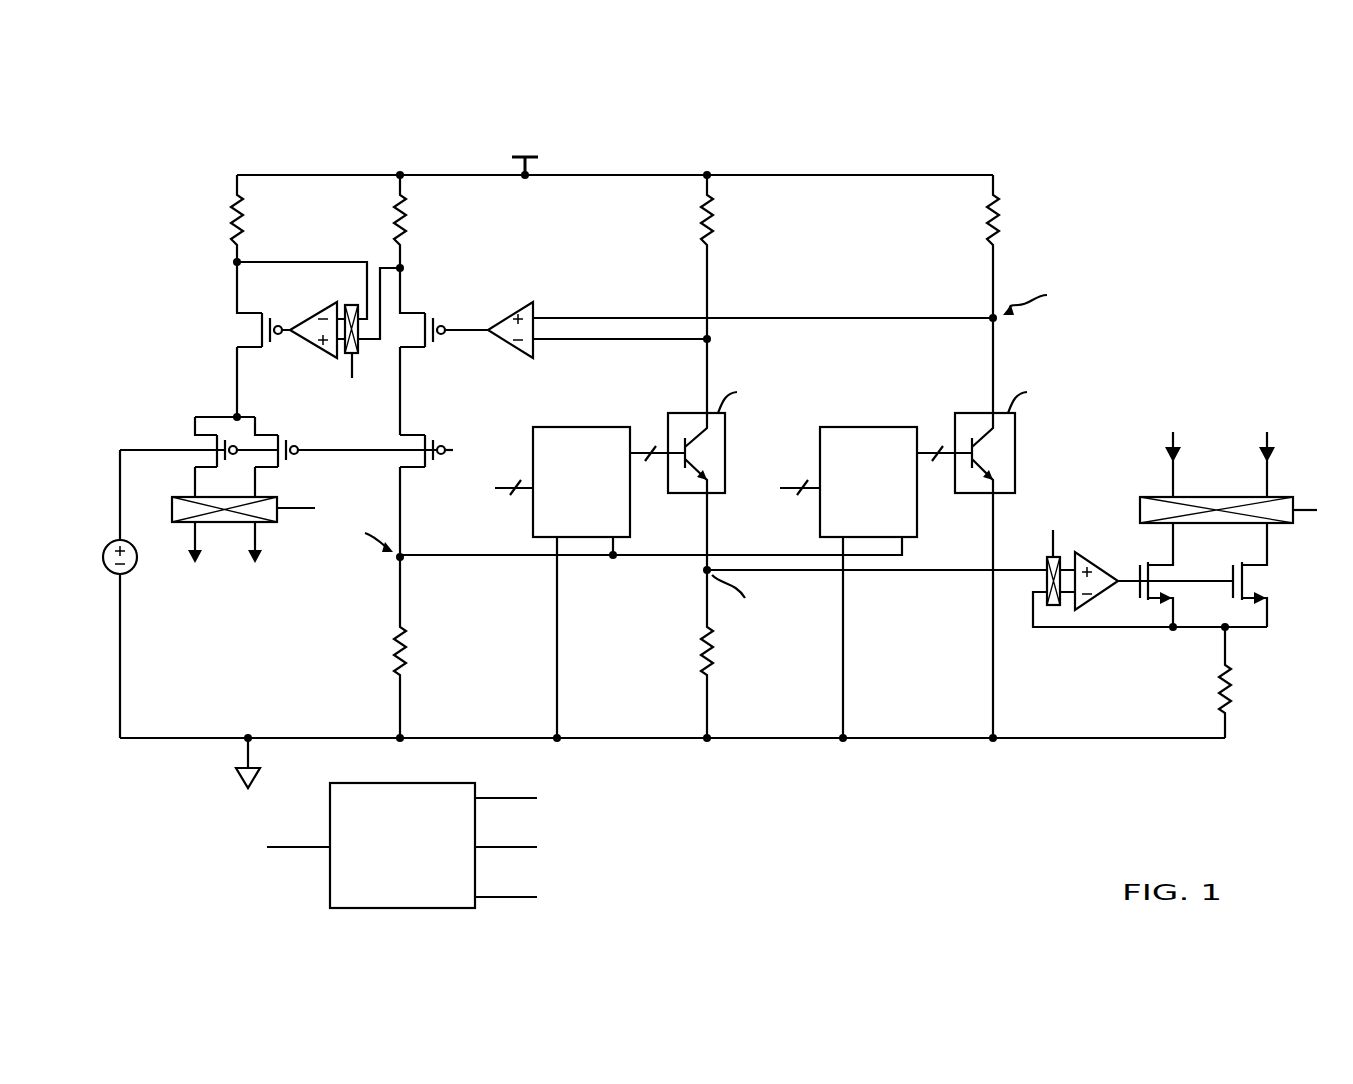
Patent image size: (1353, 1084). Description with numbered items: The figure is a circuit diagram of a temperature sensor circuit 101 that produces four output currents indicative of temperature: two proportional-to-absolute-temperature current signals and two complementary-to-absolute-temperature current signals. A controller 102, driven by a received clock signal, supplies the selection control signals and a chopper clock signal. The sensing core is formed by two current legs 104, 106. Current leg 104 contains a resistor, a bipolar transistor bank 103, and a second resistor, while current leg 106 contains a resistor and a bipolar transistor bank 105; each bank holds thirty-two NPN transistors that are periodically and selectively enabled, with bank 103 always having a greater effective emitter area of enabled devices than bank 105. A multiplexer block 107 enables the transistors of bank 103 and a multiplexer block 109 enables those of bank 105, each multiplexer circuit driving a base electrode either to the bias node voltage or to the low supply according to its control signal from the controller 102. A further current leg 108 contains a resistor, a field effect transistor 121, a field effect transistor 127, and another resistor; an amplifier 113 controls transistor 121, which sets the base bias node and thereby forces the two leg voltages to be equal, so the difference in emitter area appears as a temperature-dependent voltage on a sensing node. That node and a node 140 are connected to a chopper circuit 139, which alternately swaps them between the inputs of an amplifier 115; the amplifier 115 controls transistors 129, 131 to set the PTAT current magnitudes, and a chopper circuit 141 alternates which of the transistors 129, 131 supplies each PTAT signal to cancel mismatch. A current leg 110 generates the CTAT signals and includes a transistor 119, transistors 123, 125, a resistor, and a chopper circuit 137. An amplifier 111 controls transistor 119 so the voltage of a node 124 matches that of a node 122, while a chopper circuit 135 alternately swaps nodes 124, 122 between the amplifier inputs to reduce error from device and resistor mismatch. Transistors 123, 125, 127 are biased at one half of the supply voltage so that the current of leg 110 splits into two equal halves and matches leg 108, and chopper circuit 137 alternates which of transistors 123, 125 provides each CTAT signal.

The temperature sensor circuit 101 is at (1158, 182).
The controller 102 is at (419, 872).
The bipolar transistor bank 103 is at (676, 413).
The current leg 104 is at (707, 140).
The bipolar transistor bank 105 is at (970, 413).
The current leg 106 is at (993, 140).
The multiplexer block 107 is at (580, 425).
The current leg 108 is at (400, 140).
The multiplexer block 109 is at (860, 427).
The current leg 110 is at (237, 140).
The amplifier 111 is at (312, 350).
The amplifier 113 is at (514, 300).
The amplifier 115 is at (1113, 576).
The transistor 119 is at (258, 326).
The field effect transistor 121 is at (417, 312).
The node 122 is at (404, 268).
The transistor 123 is at (212, 443).
The node 124 is at (233, 262).
The transistor 125 is at (299, 446).
The field effect transistor 127 is at (434, 435).
The transistor 129 is at (1136, 592).
The transistor 131 is at (1268, 594).
The chopper circuit 135 is at (349, 305).
The chopper circuit 137 is at (281, 520).
The chopper circuit 139 is at (1046, 585).
The node 140 is at (1222, 632).
The chopper circuit 141 is at (1286, 497).